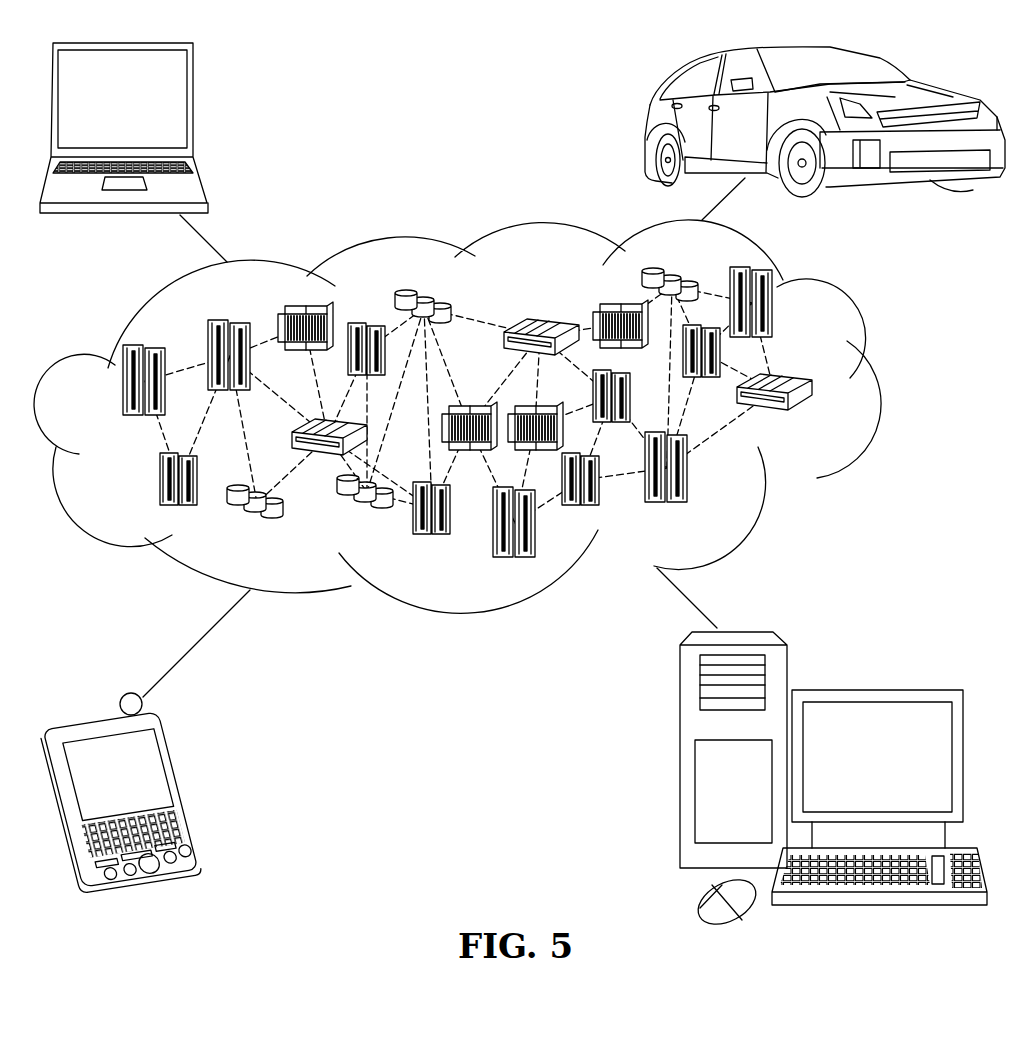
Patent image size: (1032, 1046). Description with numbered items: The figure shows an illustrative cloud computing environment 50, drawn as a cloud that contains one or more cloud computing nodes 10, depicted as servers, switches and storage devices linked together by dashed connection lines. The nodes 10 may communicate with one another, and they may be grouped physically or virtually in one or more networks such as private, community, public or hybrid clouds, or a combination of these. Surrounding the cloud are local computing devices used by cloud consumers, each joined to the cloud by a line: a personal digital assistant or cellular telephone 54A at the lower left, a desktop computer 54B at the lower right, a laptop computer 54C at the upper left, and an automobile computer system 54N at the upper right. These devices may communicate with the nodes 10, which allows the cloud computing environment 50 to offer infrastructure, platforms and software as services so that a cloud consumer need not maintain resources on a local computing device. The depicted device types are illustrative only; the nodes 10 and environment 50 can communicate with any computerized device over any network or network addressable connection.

The cloud computing node 10 is at (817, 422).
The cloud computing environment 50 is at (491, 416).
The personal digital assistant (PDA) or cellular telephone 54A is at (183, 788).
The desktop computer 54B is at (873, 690).
The laptop computer 54C is at (195, 107).
The automobile computer system 54N is at (647, 122).